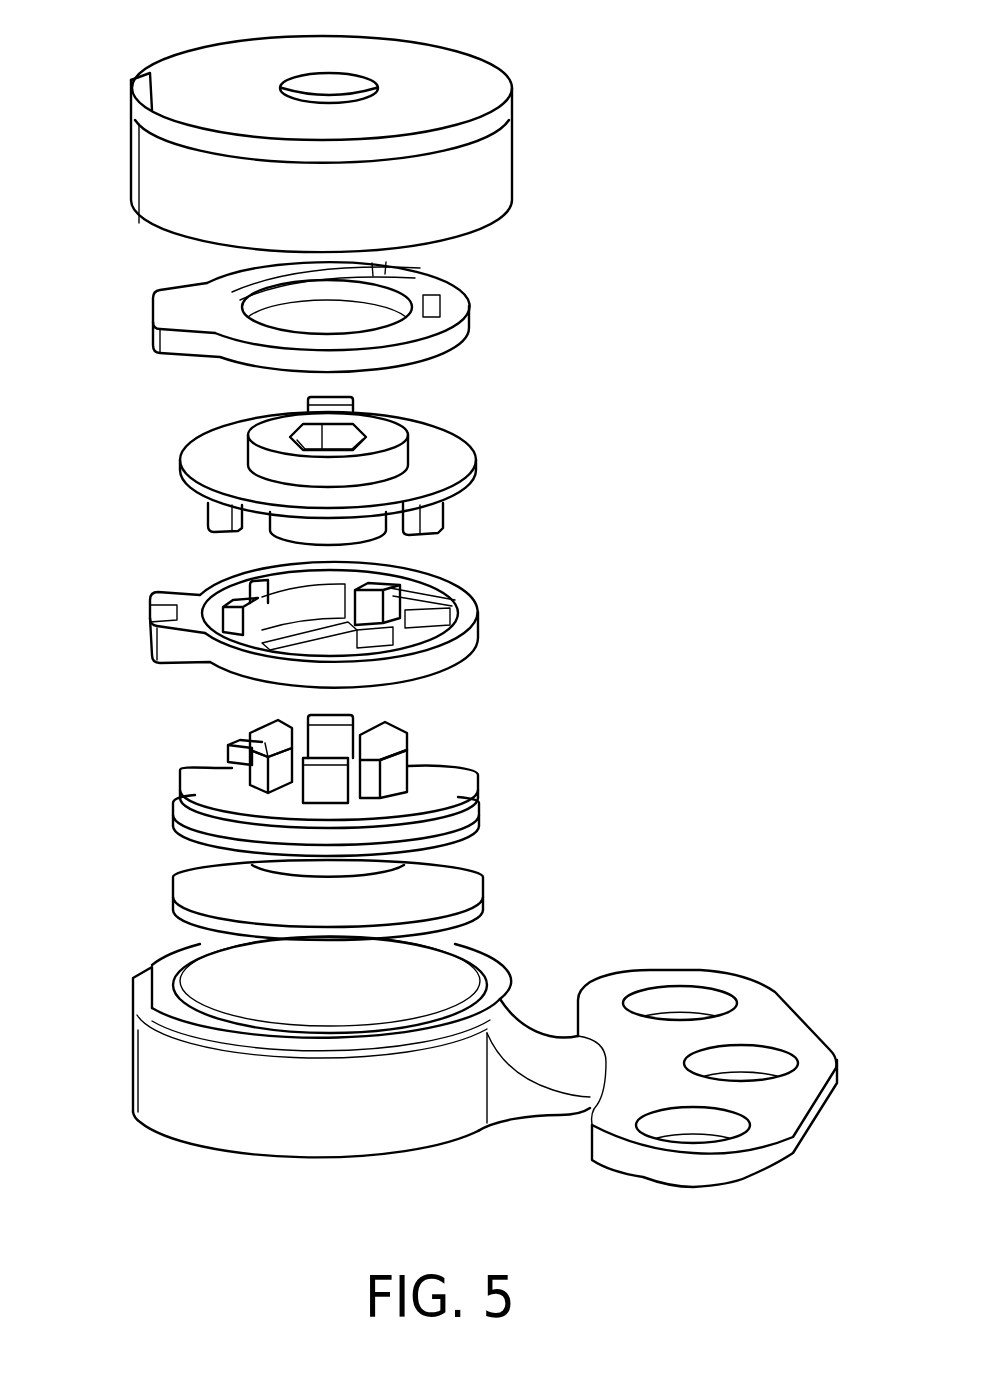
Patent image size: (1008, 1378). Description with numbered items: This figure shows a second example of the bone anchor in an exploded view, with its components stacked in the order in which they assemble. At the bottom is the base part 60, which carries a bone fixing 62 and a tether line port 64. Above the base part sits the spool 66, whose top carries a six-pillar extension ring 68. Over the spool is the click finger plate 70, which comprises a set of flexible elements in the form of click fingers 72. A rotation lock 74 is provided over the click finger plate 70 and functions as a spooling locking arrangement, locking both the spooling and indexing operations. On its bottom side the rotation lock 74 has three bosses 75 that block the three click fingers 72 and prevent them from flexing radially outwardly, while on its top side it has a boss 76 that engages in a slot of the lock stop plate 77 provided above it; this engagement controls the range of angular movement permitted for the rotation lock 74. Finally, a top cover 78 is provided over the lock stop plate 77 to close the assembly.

The base part 60 is at (500, 997).
The bone fixing 62 is at (807, 1020).
The tether line port 64 is at (464, 1061).
The spool 66 is at (371, 812).
The six-pillar extension ring 68 is at (397, 727).
The click finger plate 70 is at (335, 618).
The click fingers 72 is at (238, 604).
The rotation lock 74 is at (478, 472).
The bosses 75 is at (442, 515).
The boss 76 is at (355, 406).
The lock stop plate 77 is at (470, 322).
The top cover 78 is at (513, 146).